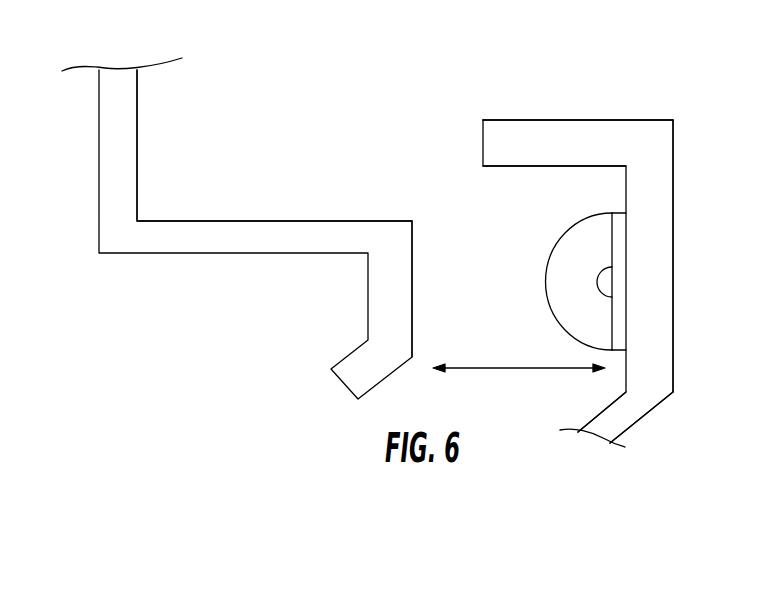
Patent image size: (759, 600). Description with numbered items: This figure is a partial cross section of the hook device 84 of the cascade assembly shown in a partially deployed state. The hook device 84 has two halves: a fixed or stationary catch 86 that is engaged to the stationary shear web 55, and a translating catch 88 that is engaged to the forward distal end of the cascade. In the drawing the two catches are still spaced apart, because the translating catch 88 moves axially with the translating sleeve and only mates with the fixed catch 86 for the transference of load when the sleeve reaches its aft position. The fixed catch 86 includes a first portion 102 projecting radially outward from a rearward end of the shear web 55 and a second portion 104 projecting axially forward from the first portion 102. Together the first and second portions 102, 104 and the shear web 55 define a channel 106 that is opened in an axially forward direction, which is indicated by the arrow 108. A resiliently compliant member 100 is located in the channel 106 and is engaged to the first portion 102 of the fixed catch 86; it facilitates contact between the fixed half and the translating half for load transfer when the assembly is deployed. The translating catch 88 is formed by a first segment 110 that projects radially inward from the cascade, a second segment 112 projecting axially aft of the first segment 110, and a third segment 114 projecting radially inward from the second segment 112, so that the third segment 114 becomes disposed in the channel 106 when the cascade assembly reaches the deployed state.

The stationary shear web 55 is at (623, 418).
The hook device 84 is at (136, 318).
The fixed catch 86 is at (612, 110).
The translating catch 88 is at (211, 270).
The resiliently compliant member 100 is at (557, 252).
The first portion 102 is at (673, 237).
The second portion 104 is at (520, 120).
The channel 106 is at (575, 199).
The arrow 108 is at (553, 372).
The first segment 110 is at (137, 147).
The second segment 112 is at (323, 221).
The third segment 114 is at (413, 300).